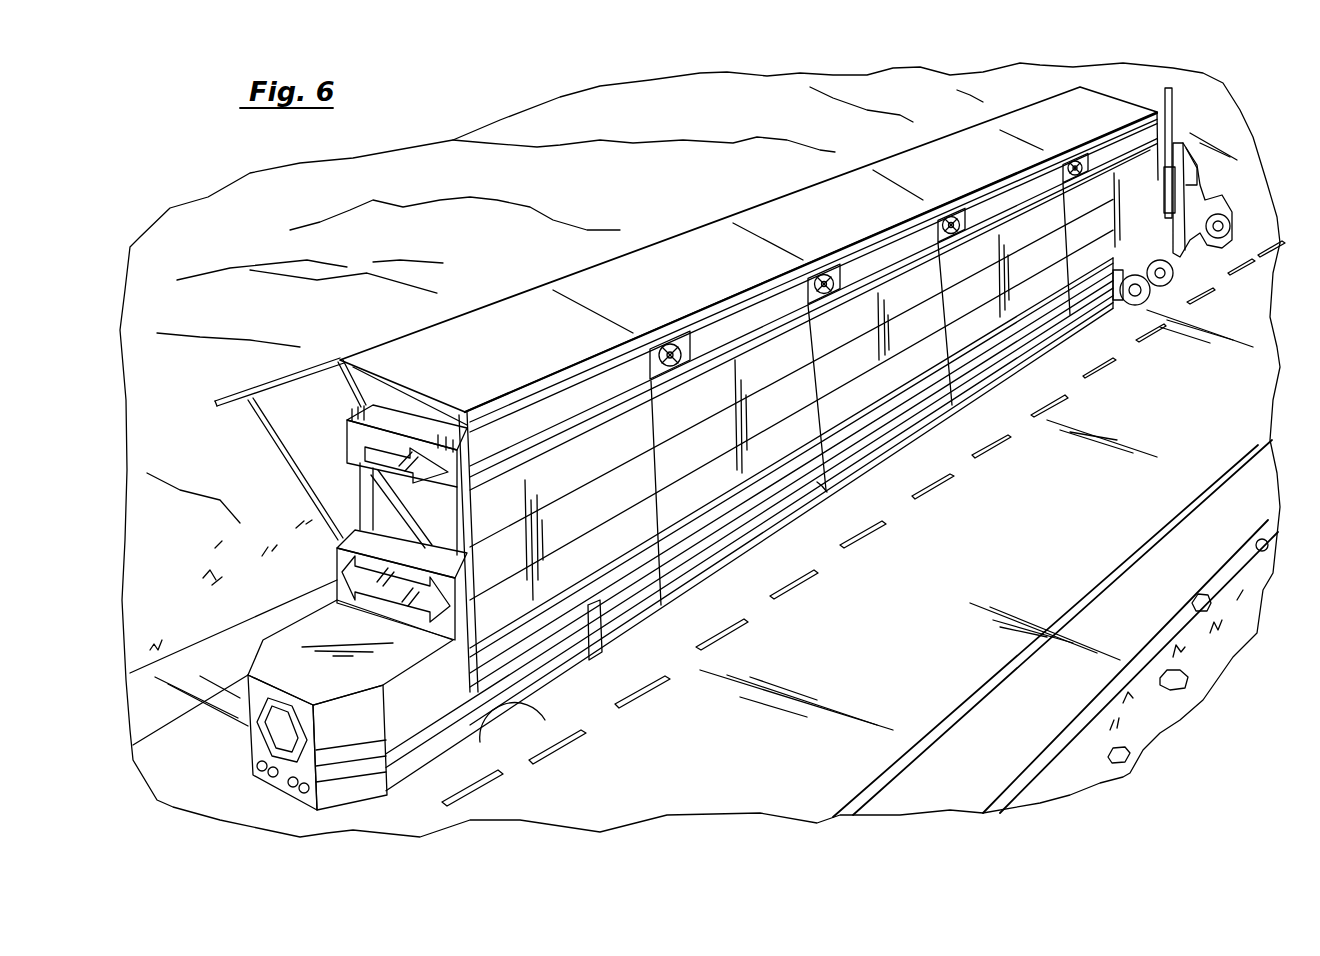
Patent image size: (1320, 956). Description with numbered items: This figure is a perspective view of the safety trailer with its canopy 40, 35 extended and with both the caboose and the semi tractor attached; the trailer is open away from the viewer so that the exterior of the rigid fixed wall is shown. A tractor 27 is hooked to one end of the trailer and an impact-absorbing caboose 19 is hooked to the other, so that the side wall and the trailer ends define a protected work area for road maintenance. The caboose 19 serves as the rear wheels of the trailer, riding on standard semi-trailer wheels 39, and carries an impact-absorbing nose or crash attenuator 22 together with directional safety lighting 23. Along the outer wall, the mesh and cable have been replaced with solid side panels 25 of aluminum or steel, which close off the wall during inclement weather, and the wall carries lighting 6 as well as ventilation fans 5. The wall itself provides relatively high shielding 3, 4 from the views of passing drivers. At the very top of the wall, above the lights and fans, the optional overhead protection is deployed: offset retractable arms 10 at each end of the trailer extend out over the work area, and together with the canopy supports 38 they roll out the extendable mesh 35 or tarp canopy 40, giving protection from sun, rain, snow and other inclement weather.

The shielding from driver views 3 is at (877, 447).
The shielding from driver views 4 is at (791, 414).
The ventilation fan 5 is at (540, 415).
The lighting 6 is at (353, 467).
The offset retractable arms 10 is at (347, 394).
The standard caboose 19 is at (331, 687).
The crash attenuator 22 is at (278, 732).
The directional safety lighting 23 is at (353, 580).
The side panels 25 is at (713, 440).
The tractor 27 is at (1190, 205).
The extendable mesh canopy 35 is at (748, 256).
The overhead protection 38 is at (222, 394).
The wheels 39 is at (525, 706).
The tarp canopy 40 is at (693, 268).